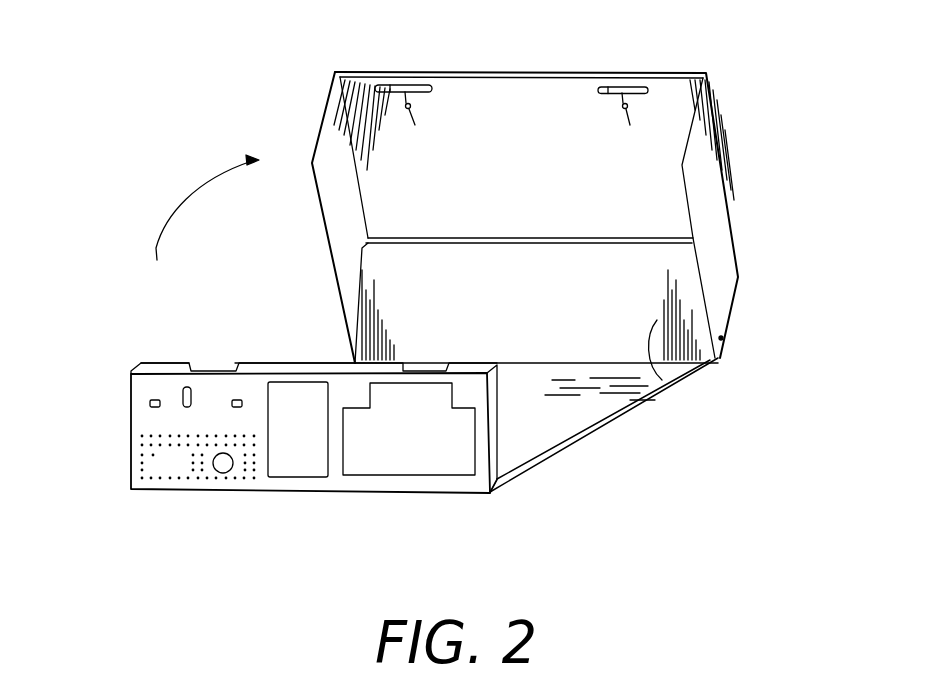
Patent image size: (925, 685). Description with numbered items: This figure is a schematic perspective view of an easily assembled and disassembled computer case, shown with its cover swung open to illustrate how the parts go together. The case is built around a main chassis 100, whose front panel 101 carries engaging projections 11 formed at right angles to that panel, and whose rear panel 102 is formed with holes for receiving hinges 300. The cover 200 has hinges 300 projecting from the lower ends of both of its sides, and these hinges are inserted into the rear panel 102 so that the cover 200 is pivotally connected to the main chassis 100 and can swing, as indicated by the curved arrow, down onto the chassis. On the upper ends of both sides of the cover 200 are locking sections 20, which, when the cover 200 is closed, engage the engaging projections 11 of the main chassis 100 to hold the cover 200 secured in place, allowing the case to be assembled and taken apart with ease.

The cover 200 is at (710, 193).
The locking sections 20 is at (413, 70).
The main chassis 100 is at (597, 397).
The front panel 101 is at (152, 412).
The rear panel 102 is at (658, 378).
The hinges 300 is at (722, 337).
The engaging projections 11 is at (164, 366).